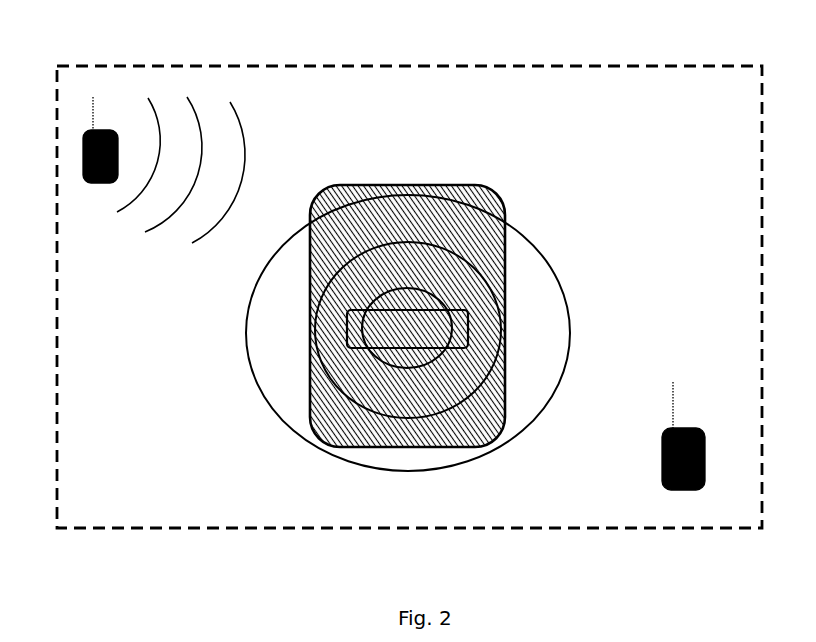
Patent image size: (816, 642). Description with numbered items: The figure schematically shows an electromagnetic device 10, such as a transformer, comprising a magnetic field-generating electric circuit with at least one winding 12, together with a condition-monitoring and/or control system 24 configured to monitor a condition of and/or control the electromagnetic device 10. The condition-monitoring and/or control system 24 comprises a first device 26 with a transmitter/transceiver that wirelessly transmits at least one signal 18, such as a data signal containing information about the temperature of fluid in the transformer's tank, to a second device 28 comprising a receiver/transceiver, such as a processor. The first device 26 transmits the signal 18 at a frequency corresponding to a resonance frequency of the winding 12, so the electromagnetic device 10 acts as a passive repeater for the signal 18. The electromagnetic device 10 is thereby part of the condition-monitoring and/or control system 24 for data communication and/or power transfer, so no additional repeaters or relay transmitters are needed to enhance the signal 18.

The electromagnetic device 10 is at (510, 187).
The winding 12 is at (347, 332).
The signal 18 is at (262, 152).
The condition-monitoring and/or control system 24 is at (630, 65).
The first device 26 is at (87, 148).
The second device 28 is at (663, 452).